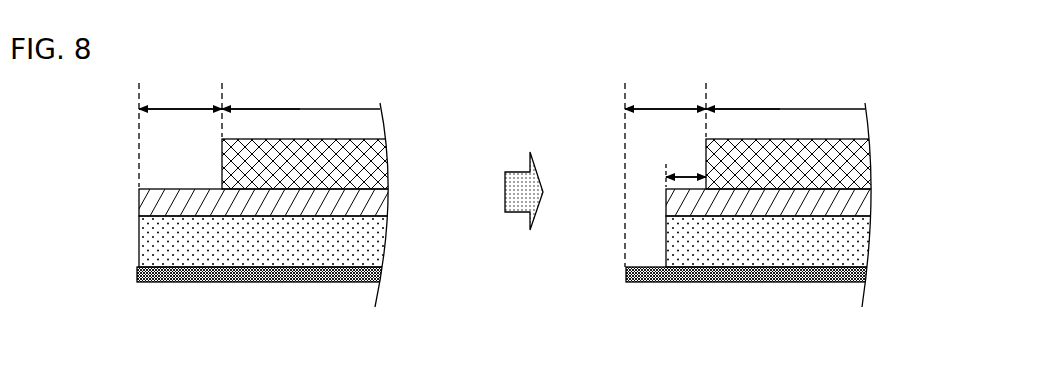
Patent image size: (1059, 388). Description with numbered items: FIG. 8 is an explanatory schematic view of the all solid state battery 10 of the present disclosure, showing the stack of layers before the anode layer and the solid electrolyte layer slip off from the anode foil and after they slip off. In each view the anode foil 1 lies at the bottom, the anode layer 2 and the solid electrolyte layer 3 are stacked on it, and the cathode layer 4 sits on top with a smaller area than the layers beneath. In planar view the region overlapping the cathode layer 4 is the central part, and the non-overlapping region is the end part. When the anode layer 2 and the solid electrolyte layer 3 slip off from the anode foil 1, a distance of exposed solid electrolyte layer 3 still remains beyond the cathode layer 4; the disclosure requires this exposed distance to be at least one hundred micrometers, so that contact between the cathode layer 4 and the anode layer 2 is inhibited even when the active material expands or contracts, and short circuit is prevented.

The anode foil 1 is at (353, 275).
The anode layer 2 is at (353, 242).
The solid electrolyte layer 3 is at (357, 205).
The cathode layer 4 is at (357, 168).
The all solid state battery 10 is at (342, 88).